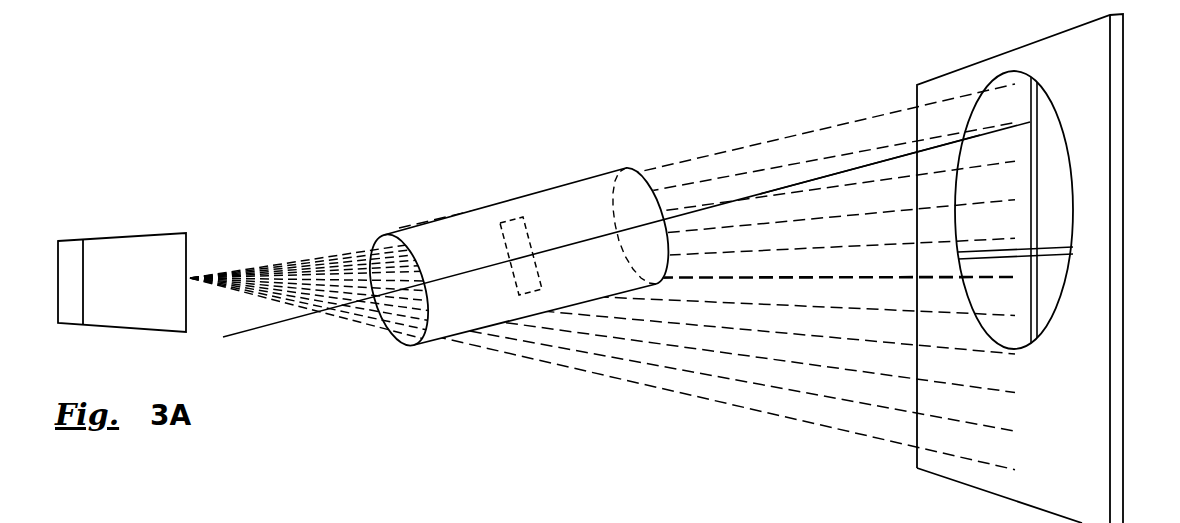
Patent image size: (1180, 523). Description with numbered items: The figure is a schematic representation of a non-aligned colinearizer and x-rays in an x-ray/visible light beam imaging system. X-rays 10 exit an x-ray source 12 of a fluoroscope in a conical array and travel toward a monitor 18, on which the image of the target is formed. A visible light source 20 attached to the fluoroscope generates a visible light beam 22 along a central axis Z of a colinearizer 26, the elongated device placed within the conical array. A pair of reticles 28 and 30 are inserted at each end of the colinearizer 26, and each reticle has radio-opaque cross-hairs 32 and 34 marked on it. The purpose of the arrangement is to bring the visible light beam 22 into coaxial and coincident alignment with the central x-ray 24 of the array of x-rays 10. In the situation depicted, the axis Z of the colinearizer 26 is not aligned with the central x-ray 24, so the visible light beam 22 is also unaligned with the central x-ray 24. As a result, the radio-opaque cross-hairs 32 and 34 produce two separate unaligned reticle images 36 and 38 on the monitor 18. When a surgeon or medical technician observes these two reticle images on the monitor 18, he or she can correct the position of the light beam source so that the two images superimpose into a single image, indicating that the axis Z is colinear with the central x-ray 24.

The x-rays 10 is at (602, 277).
The x-ray source 12 is at (122, 258).
The monitor 18 is at (1125, 100).
The visible light source 20 is at (531, 248).
The visible light beam 22 is at (870, 137).
The central x-ray 24 is at (707, 245).
The colinearizer 26 is at (520, 244).
The reticle 28 is at (399, 315).
The reticle 30 is at (640, 200).
The radio-opaque cross-hairs 32 is at (428, 290).
The radio-opaque cross-hairs 34 is at (616, 252).
The reticle image 36 is at (1063, 210).
The reticle image 38 is at (1021, 202).
The central axis Z is at (626, 251).